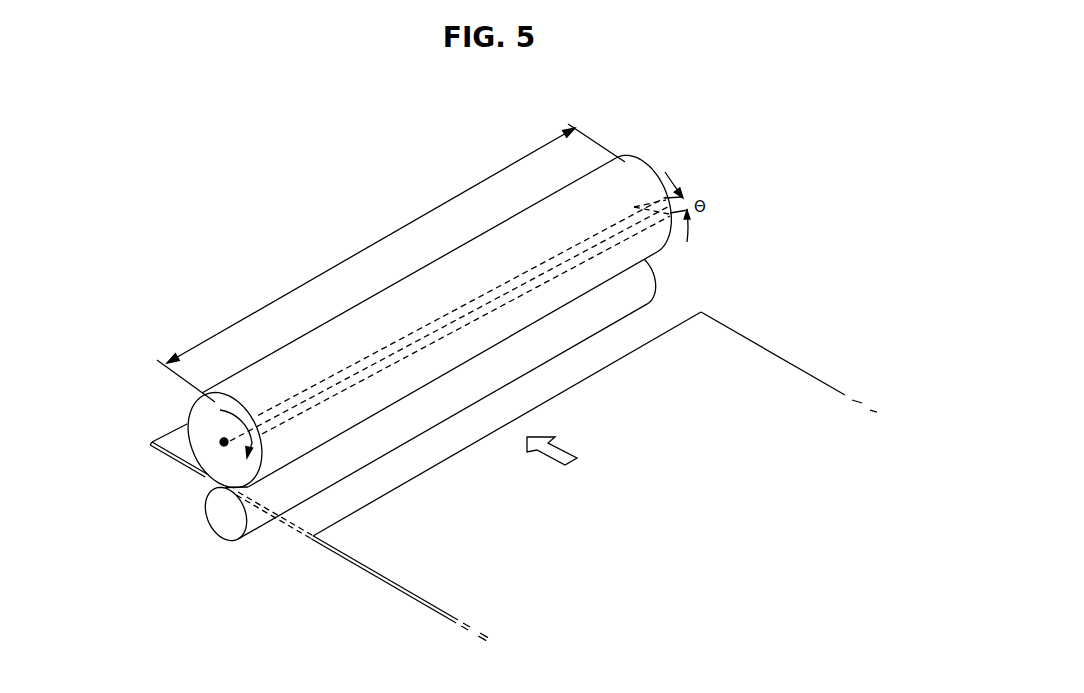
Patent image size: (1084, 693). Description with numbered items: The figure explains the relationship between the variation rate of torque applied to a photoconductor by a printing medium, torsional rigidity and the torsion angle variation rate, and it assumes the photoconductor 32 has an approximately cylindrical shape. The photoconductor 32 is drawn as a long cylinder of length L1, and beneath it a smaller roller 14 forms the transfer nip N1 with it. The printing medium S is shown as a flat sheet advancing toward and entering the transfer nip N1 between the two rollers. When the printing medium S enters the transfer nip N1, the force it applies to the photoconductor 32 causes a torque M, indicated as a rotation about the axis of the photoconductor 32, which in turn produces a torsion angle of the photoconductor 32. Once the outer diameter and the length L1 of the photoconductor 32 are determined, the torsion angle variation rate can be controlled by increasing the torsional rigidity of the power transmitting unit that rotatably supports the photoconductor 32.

The photoconductor 32 is at (180, 400).
The roller 14 is at (223, 544).
The transfer nip N1 is at (203, 489).
The printing medium S is at (395, 567).
The torque M is at (220, 410).
The length of the photoconductor L1 is at (391, 263).